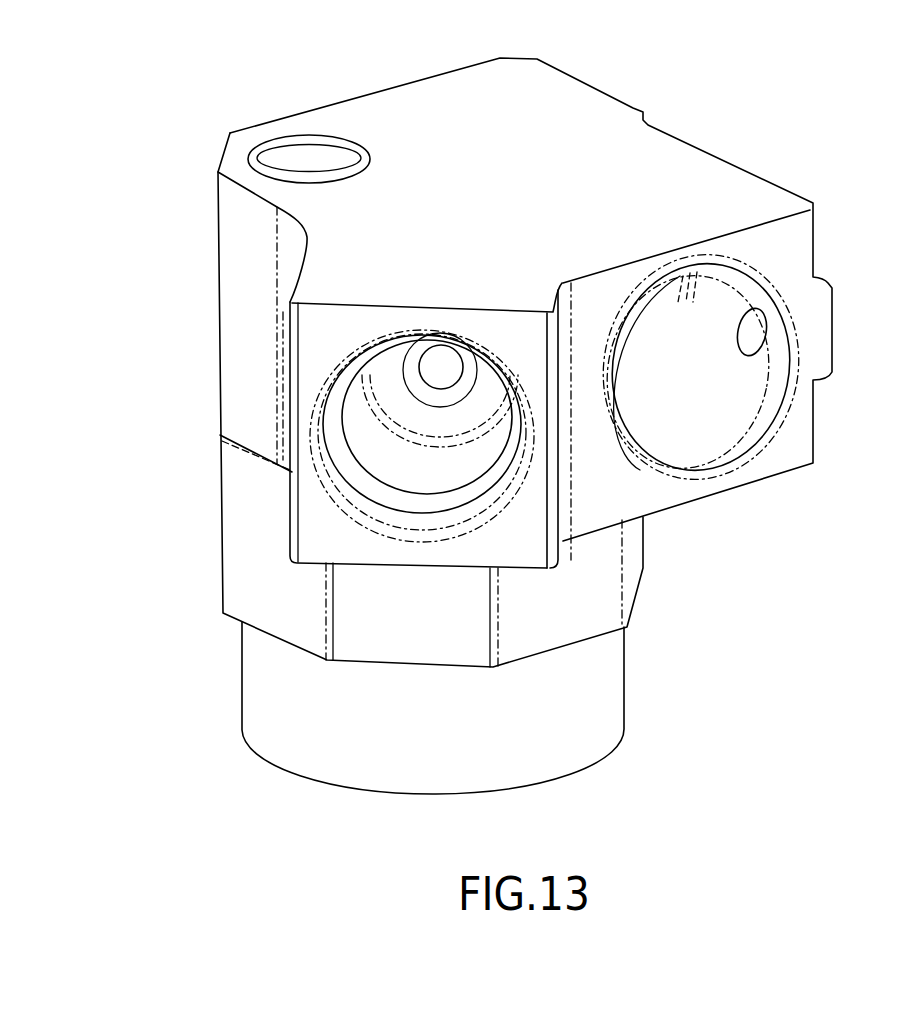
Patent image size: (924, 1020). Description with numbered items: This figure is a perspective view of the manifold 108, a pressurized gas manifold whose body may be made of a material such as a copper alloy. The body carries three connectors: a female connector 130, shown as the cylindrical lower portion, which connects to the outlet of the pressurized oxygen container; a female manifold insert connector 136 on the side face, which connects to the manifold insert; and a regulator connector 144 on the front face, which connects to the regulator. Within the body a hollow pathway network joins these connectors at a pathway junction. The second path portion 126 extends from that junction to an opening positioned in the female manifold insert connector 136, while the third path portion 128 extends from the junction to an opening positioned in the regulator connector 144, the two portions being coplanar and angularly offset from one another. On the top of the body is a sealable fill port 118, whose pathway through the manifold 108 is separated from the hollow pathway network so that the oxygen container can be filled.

The manifold 108 is at (473, 102).
The sealable fill port 118 is at (303, 163).
The second path portion 126 is at (645, 342).
The female manifold insert connector 136 is at (707, 412).
The regulator connector 144 is at (382, 490).
The third path portion 128 is at (438, 370).
The female connector 130 is at (590, 682).